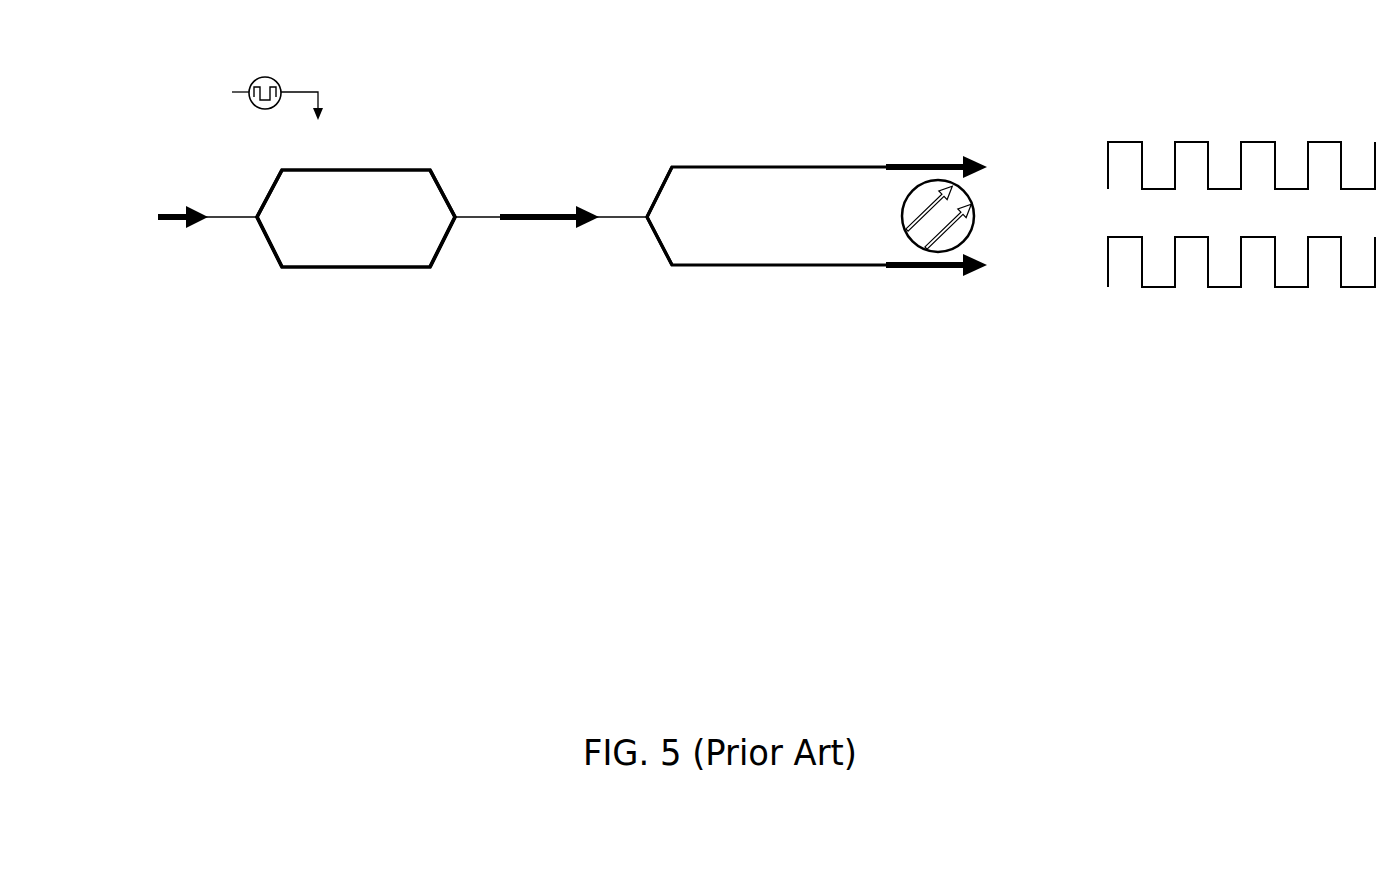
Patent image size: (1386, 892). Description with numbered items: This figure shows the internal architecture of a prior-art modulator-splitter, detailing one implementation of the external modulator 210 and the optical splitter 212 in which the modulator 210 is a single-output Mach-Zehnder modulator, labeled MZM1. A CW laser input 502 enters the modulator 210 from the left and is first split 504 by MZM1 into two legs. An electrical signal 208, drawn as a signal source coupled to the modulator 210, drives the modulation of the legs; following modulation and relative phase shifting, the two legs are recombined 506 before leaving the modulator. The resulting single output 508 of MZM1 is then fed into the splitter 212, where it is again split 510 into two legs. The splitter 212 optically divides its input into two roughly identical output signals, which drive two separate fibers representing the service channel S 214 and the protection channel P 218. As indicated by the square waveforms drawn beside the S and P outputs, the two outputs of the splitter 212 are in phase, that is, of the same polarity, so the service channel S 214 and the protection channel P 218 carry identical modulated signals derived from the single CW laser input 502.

The electrical signal 208 is at (320, 86).
The external modulator 210 is at (355, 121).
The optical splitter 212 is at (745, 120).
The service channel S 214 is at (1063, 146).
The protection channel P 218 is at (1060, 288).
The CW laser input 502 is at (158, 216).
The split 504 is at (282, 220).
The recombination 506 is at (428, 220).
The single output 508 is at (526, 205).
The split 510 is at (672, 217).